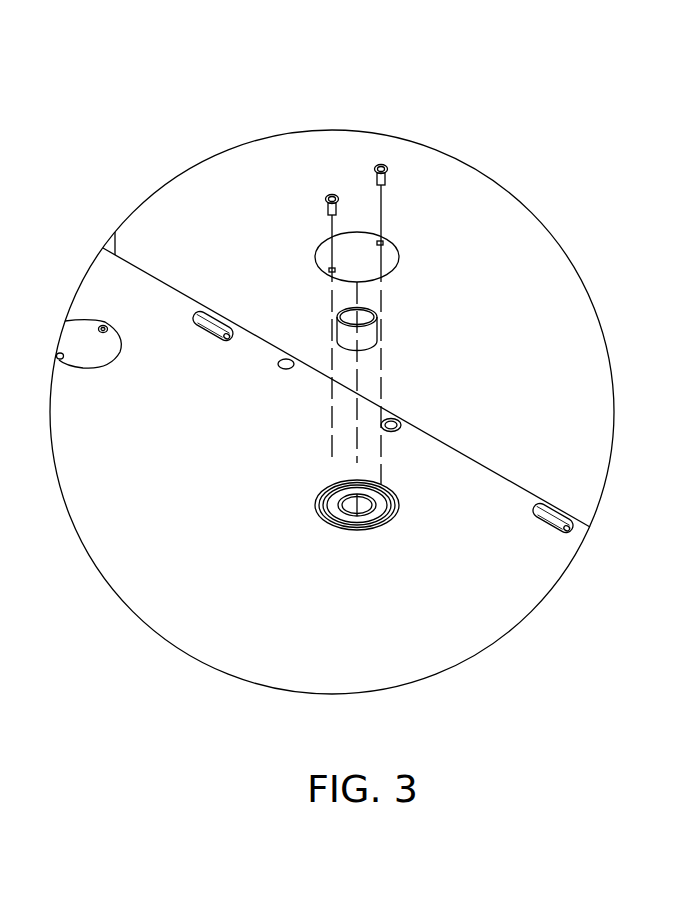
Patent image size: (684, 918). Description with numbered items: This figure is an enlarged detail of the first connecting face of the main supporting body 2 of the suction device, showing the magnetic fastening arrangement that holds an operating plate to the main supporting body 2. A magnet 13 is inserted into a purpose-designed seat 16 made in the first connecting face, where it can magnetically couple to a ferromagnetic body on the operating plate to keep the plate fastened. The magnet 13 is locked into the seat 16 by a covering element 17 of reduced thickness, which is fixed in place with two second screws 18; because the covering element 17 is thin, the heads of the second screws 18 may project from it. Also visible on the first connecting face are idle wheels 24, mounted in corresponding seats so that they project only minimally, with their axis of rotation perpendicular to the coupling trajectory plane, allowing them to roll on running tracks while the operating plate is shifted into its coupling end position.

The main supporting body 2 is at (462, 618).
The magnet 13 is at (353, 340).
The seat 16 is at (372, 497).
The covering element 17 is at (355, 255).
The second screws 18 is at (332, 194).
The idle wheels 24 is at (556, 528).